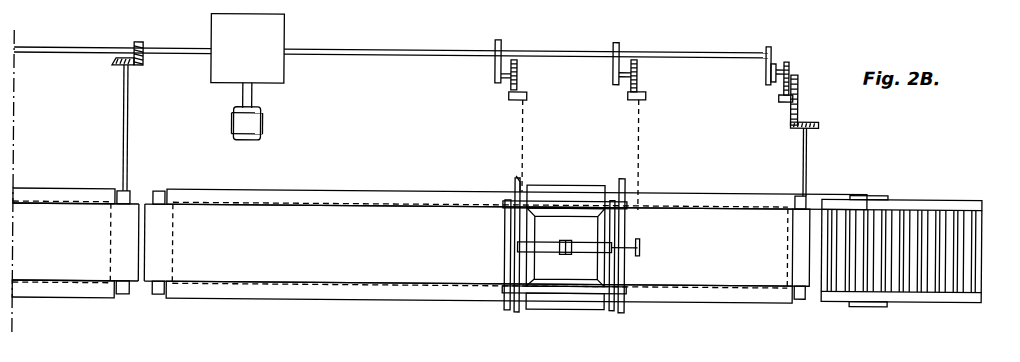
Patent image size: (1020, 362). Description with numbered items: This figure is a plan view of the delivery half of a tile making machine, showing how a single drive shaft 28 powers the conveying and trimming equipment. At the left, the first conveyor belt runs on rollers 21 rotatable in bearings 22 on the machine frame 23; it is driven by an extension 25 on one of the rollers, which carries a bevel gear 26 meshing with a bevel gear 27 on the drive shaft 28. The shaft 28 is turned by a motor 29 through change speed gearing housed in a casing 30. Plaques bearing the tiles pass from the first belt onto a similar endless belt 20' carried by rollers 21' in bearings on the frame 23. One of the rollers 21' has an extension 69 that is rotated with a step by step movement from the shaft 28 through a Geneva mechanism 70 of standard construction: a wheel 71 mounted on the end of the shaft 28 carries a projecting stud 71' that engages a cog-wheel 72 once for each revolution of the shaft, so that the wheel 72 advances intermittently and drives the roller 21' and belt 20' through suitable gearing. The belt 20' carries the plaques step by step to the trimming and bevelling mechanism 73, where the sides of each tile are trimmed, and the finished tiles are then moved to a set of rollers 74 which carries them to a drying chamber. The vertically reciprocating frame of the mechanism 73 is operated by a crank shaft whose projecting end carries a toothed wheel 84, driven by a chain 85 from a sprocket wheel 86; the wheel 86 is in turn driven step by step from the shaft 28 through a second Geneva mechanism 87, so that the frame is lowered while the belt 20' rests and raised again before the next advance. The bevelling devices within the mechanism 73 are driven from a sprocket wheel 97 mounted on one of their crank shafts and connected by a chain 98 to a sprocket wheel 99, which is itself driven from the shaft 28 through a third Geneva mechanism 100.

The endless belt 20' is at (263, 301).
The rollers 21 is at (89, 241).
The rollers 21' is at (480, 245).
The bearings 22 is at (126, 294).
The machine frame 23 is at (50, 186).
The extension 25 is at (122, 133).
The bevel gear 26 is at (134, 64).
The bevel gear 27 is at (142, 44).
The drive shaft 28 is at (38, 53).
The motor 29 is at (258, 123).
The casing 30 is at (280, 37).
The extension 69 is at (808, 160).
The Geneva mechanism 70 is at (760, 74).
The wheel 71 is at (755, 53).
The projecting stud 71' is at (800, 65).
The cog-wheel 72 is at (777, 90).
The trimming and bevelling mechanism 73 is at (564, 319).
The set of rollers 74 is at (917, 289).
The toothed wheel 84 is at (641, 245).
The chain 85 is at (640, 160).
The sprocket wheel 86 is at (645, 97).
The Geneva mechanism 87 is at (609, 84).
The sprocket wheel 97 is at (520, 178).
The chain 98 is at (520, 131).
The sprocket wheel 99 is at (526, 95).
The Geneva mechanism 100 is at (486, 68).